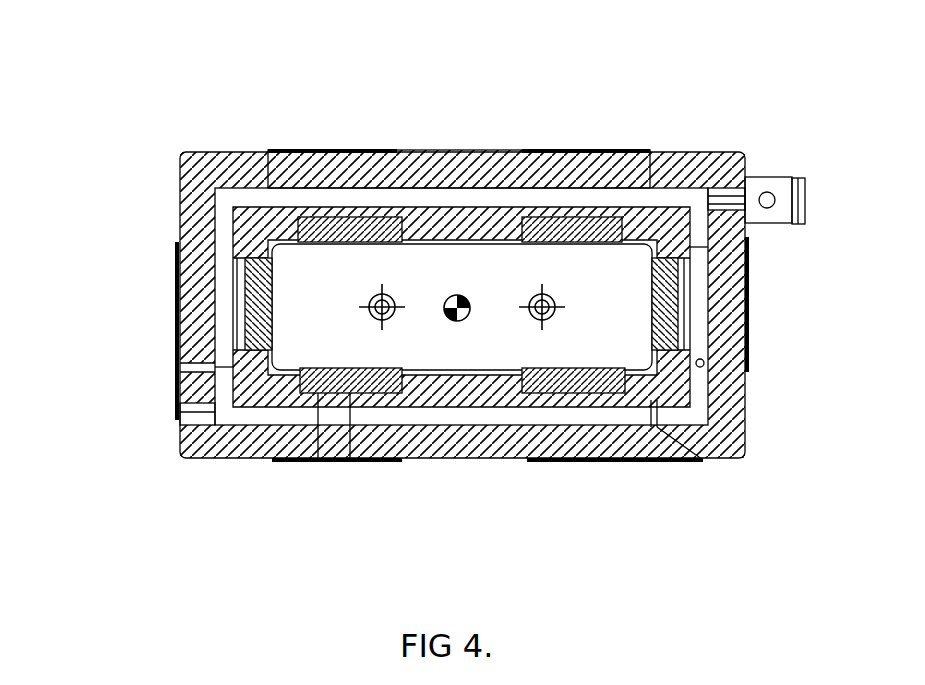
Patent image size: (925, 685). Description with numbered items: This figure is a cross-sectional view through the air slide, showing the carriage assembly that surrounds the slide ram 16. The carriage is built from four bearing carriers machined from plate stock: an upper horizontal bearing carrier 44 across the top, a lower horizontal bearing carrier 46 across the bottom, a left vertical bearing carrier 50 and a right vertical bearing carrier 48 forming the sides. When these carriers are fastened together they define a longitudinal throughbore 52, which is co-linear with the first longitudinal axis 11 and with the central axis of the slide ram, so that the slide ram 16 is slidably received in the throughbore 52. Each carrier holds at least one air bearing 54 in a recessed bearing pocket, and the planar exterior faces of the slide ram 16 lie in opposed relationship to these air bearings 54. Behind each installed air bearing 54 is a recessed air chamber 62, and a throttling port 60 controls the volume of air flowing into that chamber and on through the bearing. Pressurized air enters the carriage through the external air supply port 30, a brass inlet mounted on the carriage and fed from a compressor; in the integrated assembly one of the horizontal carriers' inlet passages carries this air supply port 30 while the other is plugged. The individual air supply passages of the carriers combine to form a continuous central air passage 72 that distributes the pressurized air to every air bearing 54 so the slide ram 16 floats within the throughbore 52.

The first longitudinal axis 11 is at (458, 322).
The slide ram 16 is at (462, 307).
The air supply port 30 is at (812, 218).
The upper horizontal bearing carrier 44 is at (468, 147).
The lower horizontal bearing carrier 46 is at (495, 465).
The right vertical bearing carrier 48 is at (750, 398).
The left vertical bearing carrier 50 is at (172, 215).
The longitudinal throughbore 52 is at (448, 290).
The air bearing 54 is at (622, 240).
The throttling port 60 is at (350, 460).
The recessed air chamber 62 is at (318, 460).
The central air passage 72 is at (750, 338).